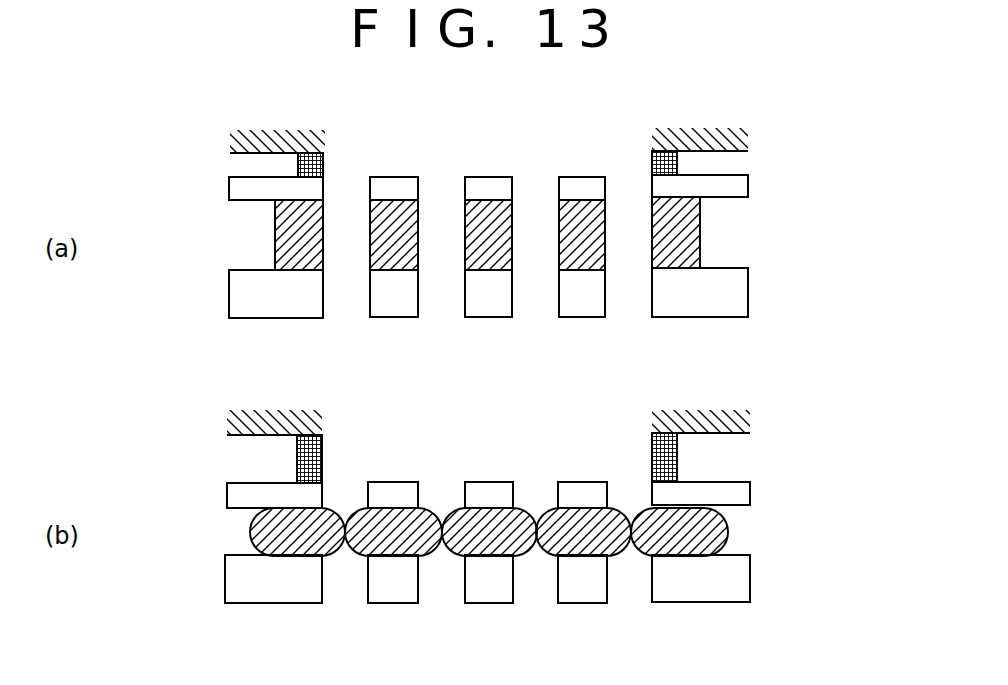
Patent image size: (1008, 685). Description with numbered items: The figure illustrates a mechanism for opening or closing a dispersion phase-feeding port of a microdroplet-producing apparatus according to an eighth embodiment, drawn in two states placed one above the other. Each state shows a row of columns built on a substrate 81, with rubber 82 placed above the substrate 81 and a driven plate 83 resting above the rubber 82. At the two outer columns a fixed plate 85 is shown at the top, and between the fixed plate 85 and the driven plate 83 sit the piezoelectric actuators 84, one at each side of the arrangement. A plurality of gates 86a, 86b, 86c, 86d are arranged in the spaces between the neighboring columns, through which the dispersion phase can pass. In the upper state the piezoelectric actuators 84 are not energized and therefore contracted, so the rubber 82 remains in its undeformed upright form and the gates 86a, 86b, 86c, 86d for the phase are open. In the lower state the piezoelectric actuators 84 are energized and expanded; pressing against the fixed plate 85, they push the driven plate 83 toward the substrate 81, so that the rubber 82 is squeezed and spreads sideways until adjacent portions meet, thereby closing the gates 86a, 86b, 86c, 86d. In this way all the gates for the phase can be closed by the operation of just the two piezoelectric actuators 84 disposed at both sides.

The substrate 81 is at (748, 301).
The rubber 82 is at (700, 231).
The driven plate 83 is at (748, 186).
The piezoelectric actuators 84 is at (677, 166).
The fixed plate 85 is at (747, 138).
The gate 86a is at (348, 255).
The gate 86b is at (443, 255).
The gate 86c is at (536, 255).
The gate 86d is at (628, 253).